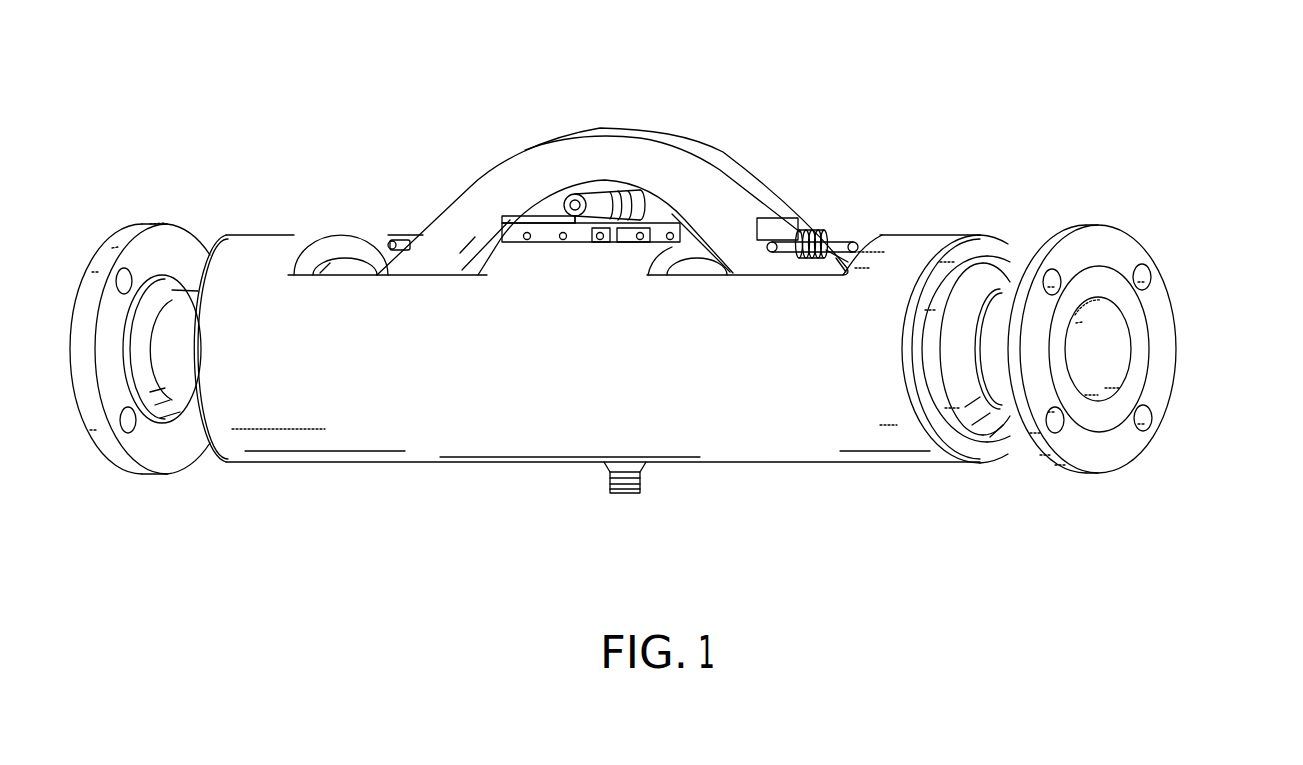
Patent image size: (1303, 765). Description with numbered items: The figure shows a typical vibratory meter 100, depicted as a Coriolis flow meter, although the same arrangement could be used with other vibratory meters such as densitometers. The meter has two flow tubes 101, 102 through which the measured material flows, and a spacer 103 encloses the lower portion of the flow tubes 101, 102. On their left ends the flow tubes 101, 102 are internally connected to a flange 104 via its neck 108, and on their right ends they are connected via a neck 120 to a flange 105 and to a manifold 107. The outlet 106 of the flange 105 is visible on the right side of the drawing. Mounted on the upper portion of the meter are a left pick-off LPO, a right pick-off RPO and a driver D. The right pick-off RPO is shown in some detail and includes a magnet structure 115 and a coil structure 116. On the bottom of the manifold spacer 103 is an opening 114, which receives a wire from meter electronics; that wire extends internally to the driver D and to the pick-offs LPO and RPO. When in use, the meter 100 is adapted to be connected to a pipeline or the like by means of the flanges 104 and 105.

The vibratory meter 100 is at (882, 122).
The flow tube 101 is at (537, 150).
The flow tube 102 is at (694, 136).
The spacer 103 is at (448, 447).
The flange 104 is at (182, 462).
The flange 105 is at (1110, 460).
The outlet 106 is at (1120, 367).
The manifold 107 is at (990, 275).
The neck 108 is at (173, 290).
The opening 114 is at (630, 495).
The magnet structure 115 is at (778, 256).
The coil structure 116 is at (854, 241).
The neck 120 is at (990, 363).
The left pick-off LPO is at (408, 240).
The right pick-off RPO is at (825, 235).
The driver D is at (600, 213).